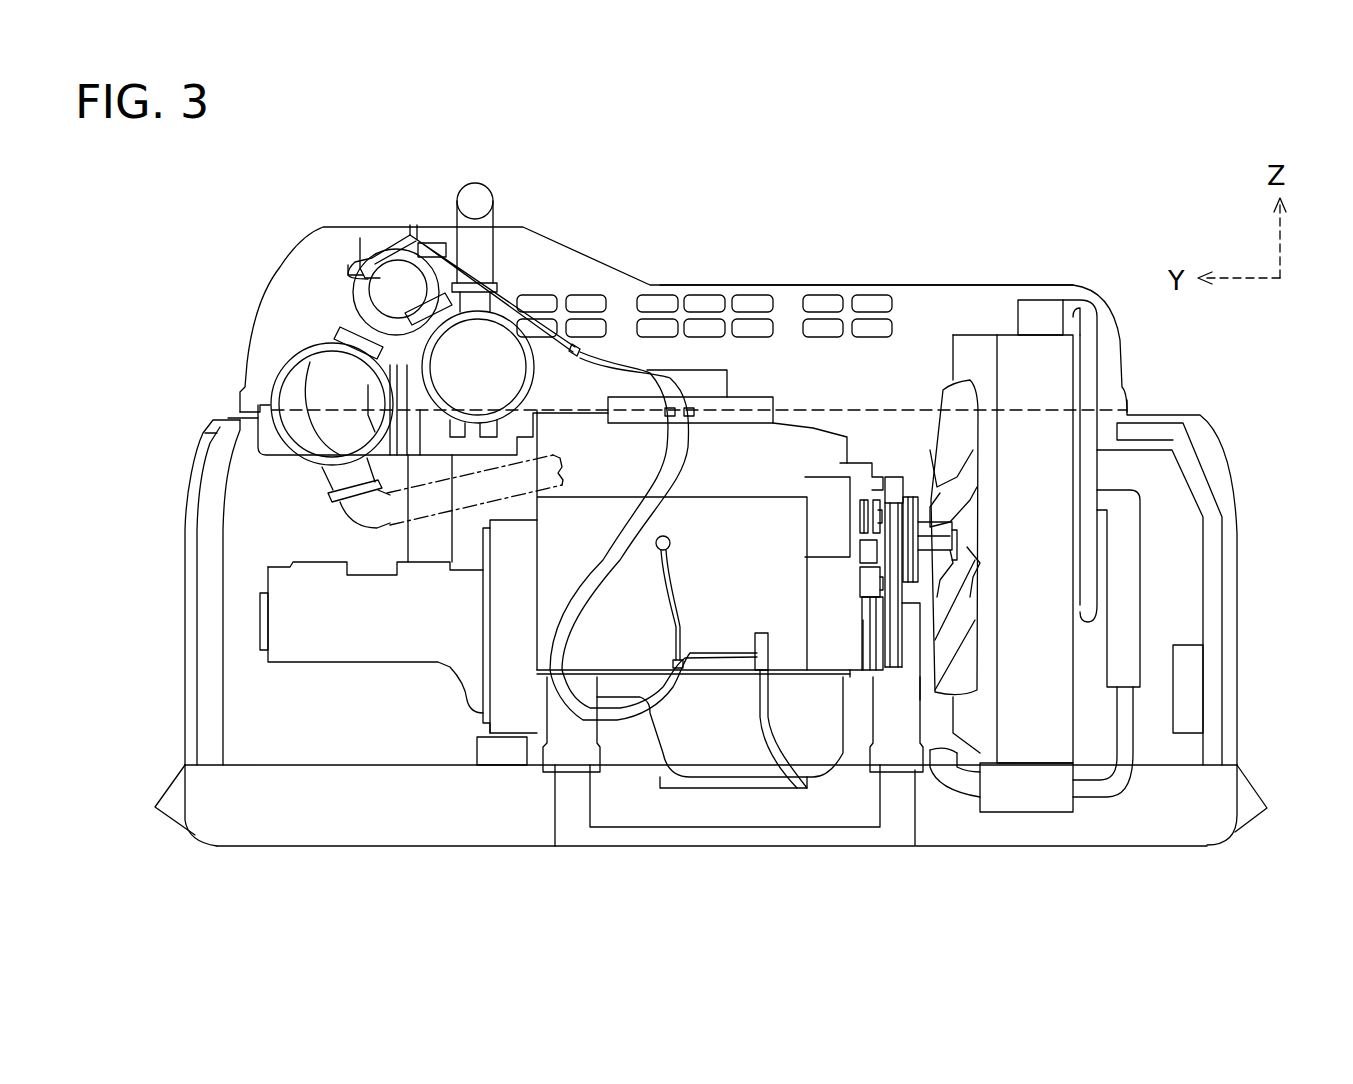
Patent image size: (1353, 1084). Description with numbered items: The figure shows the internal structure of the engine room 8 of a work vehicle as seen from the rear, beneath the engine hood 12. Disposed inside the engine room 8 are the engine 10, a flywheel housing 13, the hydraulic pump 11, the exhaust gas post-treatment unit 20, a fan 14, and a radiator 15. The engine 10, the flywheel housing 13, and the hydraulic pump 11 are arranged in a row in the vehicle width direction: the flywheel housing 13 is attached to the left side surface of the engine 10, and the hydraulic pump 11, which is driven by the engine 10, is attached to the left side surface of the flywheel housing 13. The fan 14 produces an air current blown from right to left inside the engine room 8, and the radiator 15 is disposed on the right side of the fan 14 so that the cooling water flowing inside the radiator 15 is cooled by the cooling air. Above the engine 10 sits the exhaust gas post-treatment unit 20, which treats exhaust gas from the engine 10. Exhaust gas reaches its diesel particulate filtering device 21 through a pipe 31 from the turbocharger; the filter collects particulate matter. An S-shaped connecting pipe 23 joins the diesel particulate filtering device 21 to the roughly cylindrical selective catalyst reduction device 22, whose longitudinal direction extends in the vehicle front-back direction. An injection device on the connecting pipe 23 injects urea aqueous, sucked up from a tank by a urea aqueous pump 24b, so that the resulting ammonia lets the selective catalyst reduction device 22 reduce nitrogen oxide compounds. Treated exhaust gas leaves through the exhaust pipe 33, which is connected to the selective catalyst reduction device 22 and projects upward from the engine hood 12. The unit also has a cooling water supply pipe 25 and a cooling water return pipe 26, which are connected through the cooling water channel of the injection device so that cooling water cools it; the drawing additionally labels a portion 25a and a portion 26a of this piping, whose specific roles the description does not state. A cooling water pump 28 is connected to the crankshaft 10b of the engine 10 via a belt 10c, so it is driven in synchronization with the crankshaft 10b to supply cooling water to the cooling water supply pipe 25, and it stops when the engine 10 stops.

The engine room 8 is at (787, 307).
The engine 10 is at (733, 663).
The crankshaft 10b is at (885, 670).
The belt 10c is at (860, 672).
The hydraulic pump 11 is at (338, 655).
The engine hood 12 is at (863, 283).
The flywheel housing 13 is at (505, 710).
The fan 14 is at (943, 397).
The radiator 15 is at (997, 327).
The exhaust gas post-treatment unit 20 is at (313, 300).
The diesel particulate filtering device 21 is at (285, 375).
The selective catalyst reduction device 22 is at (487, 340).
The connecting pipe 23 is at (398, 275).
The urea aqueous pump 24b is at (1197, 685).
The cooling water supply pipe 25 is at (600, 383).
The hose upper portion 25a is at (407, 233).
The cooling water return pipe 26 is at (667, 360).
The wire clamp 26a is at (420, 237).
The cooling water pump 28 is at (868, 553).
The pipe 31 is at (367, 515).
The exhaust pipe 33 is at (482, 258).